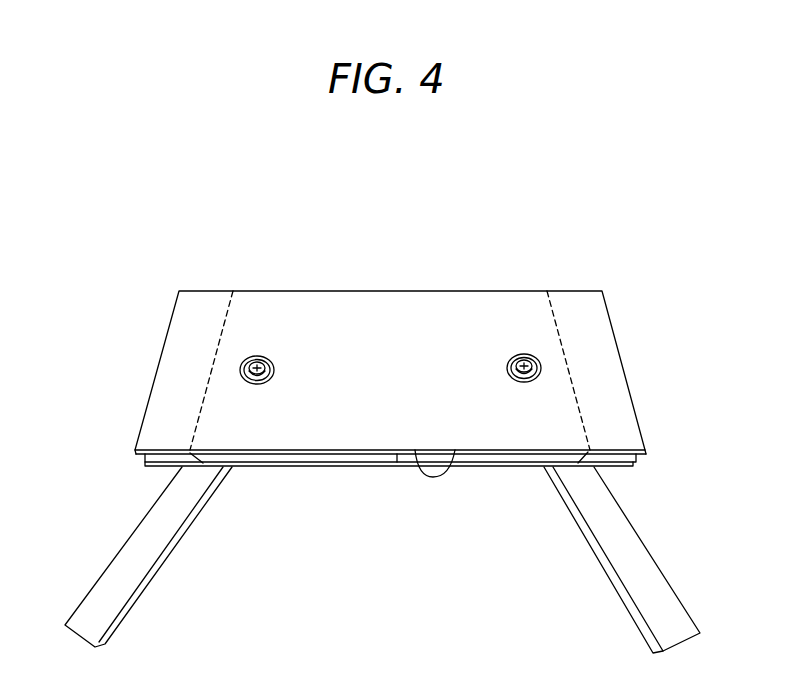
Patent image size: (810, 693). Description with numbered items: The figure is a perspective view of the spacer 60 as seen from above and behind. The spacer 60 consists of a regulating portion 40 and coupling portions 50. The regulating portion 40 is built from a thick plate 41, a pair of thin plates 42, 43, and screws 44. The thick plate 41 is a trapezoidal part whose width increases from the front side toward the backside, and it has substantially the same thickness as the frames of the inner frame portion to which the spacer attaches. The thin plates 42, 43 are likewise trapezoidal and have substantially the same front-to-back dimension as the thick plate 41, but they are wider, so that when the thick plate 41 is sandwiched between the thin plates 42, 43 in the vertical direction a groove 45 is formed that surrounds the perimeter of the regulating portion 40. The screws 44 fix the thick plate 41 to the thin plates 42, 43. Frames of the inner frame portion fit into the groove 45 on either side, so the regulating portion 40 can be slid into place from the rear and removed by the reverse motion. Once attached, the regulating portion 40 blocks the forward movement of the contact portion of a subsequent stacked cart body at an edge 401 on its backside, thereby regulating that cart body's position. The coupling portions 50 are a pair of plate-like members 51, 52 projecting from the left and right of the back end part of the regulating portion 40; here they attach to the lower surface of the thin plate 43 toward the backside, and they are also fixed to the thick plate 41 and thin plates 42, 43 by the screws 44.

The spacer 60 is at (321, 216).
The regulating portion 40 is at (379, 292).
The edge 401 is at (442, 474).
The thick plate 41 is at (493, 460).
The thin plate 42 is at (633, 438).
The thin plate 43 is at (635, 458).
The screws 44 is at (257, 355).
The groove 45 is at (182, 362).
The coupling portions 50 is at (92, 527).
The plate-like member 51 is at (637, 578).
The plate-like member 52 is at (125, 579).